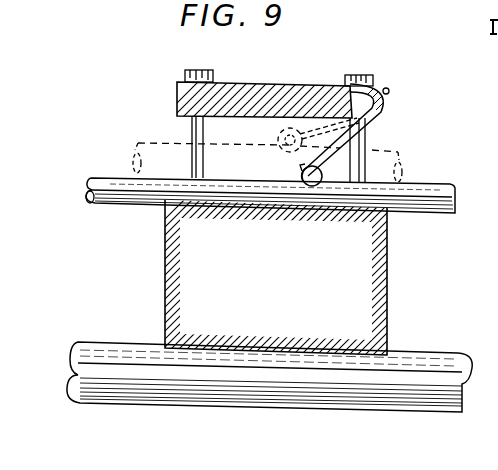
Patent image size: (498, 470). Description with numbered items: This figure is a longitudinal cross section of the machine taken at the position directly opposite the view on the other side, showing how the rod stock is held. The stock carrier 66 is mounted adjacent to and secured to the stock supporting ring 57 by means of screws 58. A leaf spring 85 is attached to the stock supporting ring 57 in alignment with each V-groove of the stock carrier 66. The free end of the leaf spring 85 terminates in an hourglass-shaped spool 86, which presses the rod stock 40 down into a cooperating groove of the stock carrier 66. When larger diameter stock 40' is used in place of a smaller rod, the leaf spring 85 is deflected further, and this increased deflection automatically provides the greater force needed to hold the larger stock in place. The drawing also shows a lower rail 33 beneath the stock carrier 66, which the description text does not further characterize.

The lower rail 33 is at (424, 364).
The upper rail 40 is at (263, 181).
The alternate rail position 40' is at (282, 150).
The cross bar 57 is at (320, 90).
The bolt 58 is at (196, 72).
The block 66 is at (272, 278).
The arm 85 is at (384, 104).
The roller 86 is at (300, 177).